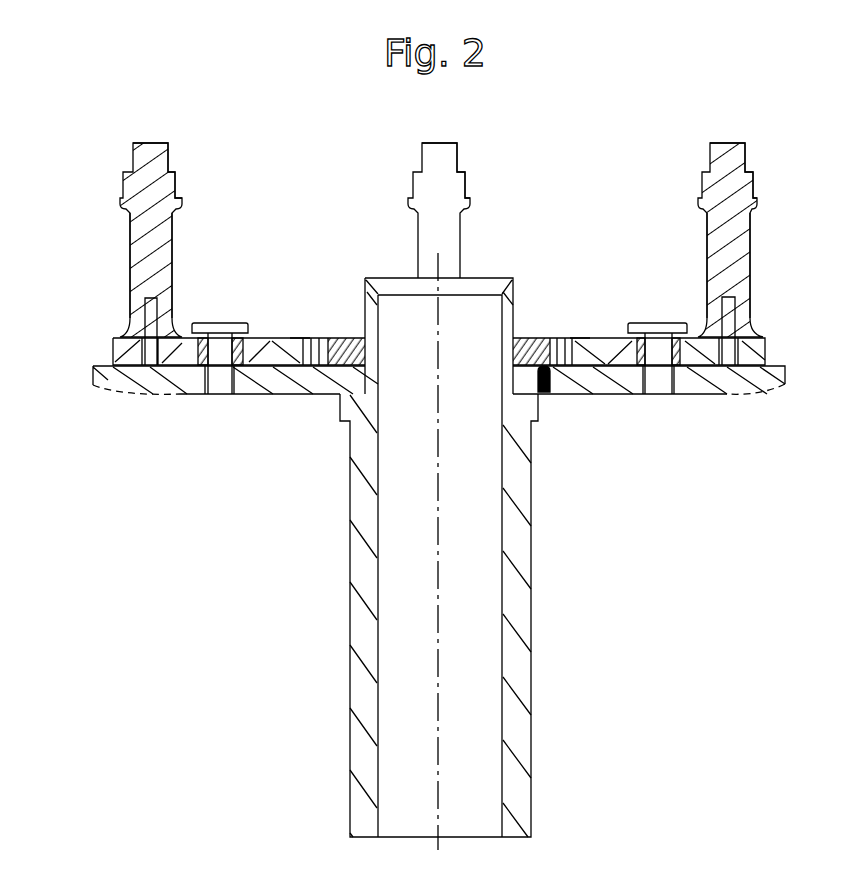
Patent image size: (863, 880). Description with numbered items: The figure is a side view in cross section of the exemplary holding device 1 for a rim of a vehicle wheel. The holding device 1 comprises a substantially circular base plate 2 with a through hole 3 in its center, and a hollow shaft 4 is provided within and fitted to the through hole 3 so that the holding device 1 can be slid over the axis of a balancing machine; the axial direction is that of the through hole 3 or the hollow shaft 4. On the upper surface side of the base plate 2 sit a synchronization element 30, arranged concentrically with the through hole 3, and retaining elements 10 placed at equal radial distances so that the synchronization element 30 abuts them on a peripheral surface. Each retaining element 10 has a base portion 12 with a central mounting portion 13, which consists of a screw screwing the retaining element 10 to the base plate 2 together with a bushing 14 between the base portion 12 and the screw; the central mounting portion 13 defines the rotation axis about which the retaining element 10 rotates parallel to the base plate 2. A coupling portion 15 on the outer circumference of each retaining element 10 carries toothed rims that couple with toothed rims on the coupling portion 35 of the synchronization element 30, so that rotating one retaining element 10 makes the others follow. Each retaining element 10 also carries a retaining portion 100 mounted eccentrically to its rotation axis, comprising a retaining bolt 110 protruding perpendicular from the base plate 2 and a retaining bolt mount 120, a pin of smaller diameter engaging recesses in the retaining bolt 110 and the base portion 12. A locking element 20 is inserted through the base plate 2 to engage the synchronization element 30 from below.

The holding device 1 is at (101, 483).
The base plate 2 is at (108, 377).
The through hole 3 is at (438, 253).
The hollow shaft 4 is at (360, 528).
The retaining element 10 is at (210, 251).
The base portion 12 is at (270, 352).
The central mounting portion 13 is at (220, 410).
The bushing 14 is at (200, 365).
The coupling portion 15 is at (298, 340).
The locking element 20 is at (546, 392).
The synchronization element 30 is at (533, 340).
The coupling portion 35 is at (328, 338).
The retaining portion 100 is at (438, 230).
The retaining bolt 110 is at (132, 256).
The retaining bolt mount 120 is at (150, 327).